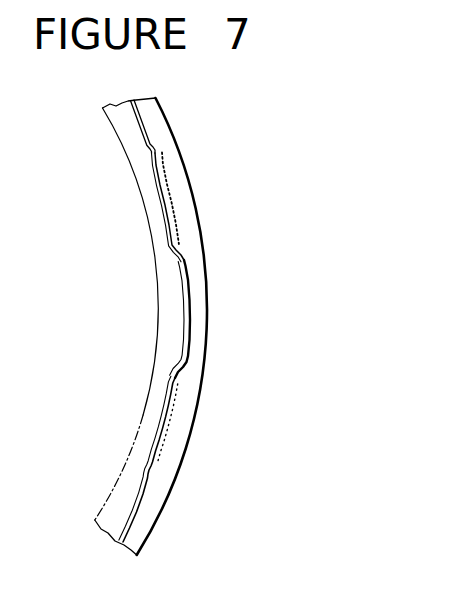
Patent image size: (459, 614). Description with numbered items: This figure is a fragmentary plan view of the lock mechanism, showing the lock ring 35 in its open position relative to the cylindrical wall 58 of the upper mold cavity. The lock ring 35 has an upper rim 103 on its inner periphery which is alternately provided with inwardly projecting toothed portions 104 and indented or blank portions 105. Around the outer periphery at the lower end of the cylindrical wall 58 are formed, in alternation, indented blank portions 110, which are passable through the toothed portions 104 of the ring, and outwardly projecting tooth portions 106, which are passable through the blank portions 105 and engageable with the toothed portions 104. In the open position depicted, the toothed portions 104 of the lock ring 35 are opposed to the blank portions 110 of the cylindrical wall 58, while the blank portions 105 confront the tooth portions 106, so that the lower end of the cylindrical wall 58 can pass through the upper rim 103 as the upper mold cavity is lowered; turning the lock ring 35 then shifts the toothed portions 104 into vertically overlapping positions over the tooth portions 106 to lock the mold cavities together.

The lock ring 35 is at (186, 163).
The cylindrical wall 58 is at (125, 468).
The upper rim 103 is at (182, 211).
The toothed portions 104 is at (162, 200).
The indented blank portions 105 is at (151, 139).
The tooth portions 106 is at (183, 323).
The indented blank portions 110 is at (167, 395).